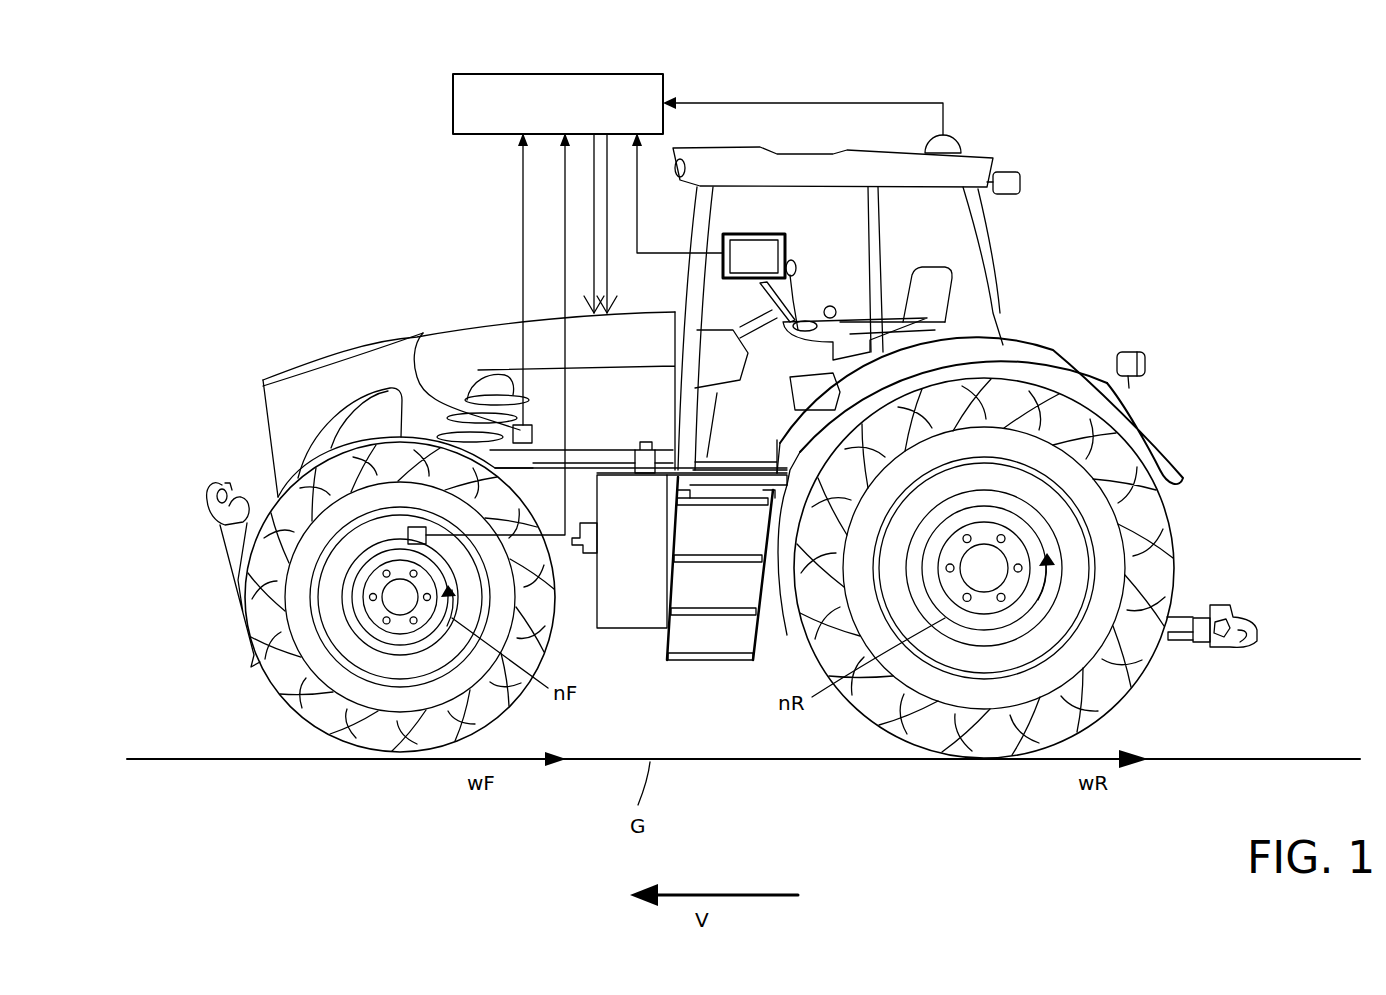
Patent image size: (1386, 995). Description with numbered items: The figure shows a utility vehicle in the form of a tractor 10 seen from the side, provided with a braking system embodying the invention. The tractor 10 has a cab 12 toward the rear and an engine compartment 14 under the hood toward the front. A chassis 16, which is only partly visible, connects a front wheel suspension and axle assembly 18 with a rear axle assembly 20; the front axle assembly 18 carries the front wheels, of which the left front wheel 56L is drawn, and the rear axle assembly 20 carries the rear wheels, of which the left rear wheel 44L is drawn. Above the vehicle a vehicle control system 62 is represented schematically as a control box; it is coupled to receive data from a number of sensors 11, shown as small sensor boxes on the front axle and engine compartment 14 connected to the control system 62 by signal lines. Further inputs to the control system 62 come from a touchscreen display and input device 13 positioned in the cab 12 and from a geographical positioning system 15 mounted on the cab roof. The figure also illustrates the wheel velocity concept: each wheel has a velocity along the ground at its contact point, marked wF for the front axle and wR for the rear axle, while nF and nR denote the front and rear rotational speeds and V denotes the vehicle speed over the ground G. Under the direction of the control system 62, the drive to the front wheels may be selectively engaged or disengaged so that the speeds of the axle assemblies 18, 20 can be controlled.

The tractor 10 is at (391, 216).
The sensors 11 is at (513, 425).
The cab 12 is at (943, 220).
The touchscreen display and input device 13 is at (757, 260).
The engine compartment 14 is at (487, 357).
The geographical positioning system 15 is at (943, 145).
The chassis 16 is at (588, 557).
The front wheel suspension and axle assembly 18 is at (377, 760).
The rear axle assembly 20 is at (1052, 760).
The vehicle control system 62 is at (473, 102).
The left rear wheel 44L is at (1065, 570).
The left front wheel 56L is at (333, 615).